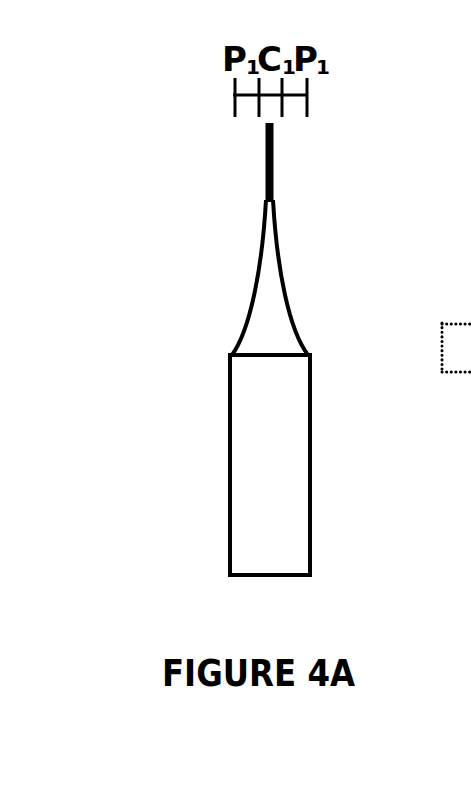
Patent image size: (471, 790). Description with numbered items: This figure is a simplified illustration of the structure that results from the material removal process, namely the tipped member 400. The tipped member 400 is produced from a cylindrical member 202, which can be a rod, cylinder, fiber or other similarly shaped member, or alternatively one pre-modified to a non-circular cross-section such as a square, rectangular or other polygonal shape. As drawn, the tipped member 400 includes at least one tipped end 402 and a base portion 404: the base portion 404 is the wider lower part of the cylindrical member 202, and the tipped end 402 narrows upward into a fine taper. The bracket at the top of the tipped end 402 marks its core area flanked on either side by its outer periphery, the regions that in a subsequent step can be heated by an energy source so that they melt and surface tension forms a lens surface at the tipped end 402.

The tipped member 400 is at (362, 222).
The tipped end 402 is at (215, 245).
The base portion 404 is at (208, 455).
The cylindrical member 202 is at (311, 472).